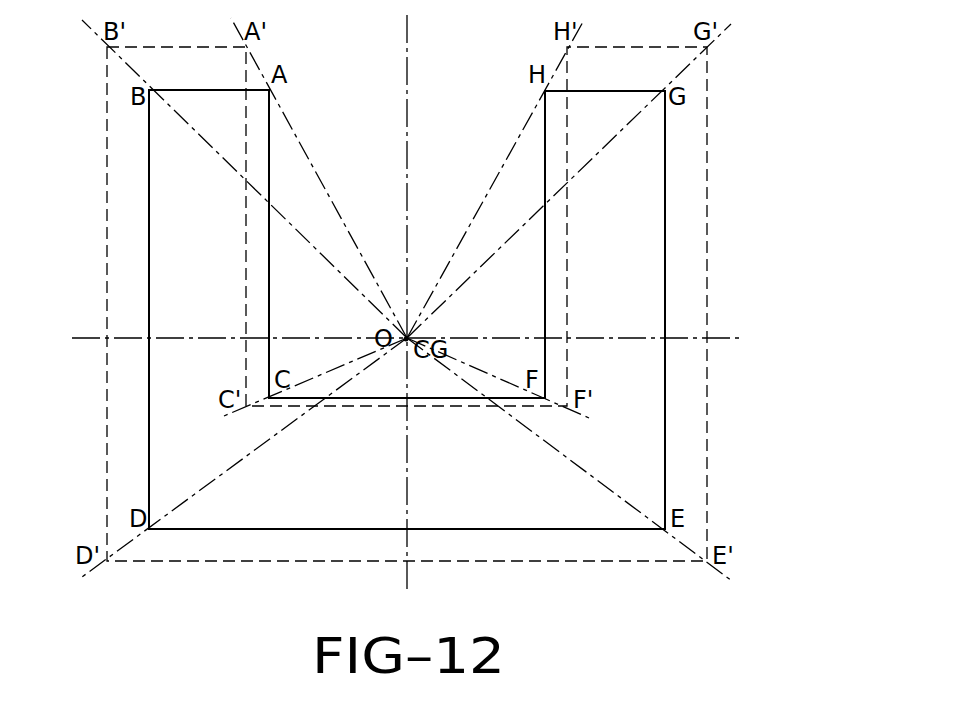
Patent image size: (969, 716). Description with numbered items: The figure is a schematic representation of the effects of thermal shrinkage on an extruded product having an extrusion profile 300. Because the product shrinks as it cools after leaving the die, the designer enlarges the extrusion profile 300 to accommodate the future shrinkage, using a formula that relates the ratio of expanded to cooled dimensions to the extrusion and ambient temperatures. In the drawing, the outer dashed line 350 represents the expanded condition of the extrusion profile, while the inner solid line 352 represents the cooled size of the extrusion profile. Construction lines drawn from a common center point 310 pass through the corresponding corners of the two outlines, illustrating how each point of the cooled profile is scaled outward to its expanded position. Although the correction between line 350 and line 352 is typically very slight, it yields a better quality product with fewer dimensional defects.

The extrusion profile 300 is at (213, 601).
The center of gravity point (O/CG) 310 is at (405, 341).
The line representing expanded condition of extrusion profile 350 is at (707, 142).
The line representing cooled size of extrusion profile 352 is at (665, 217).